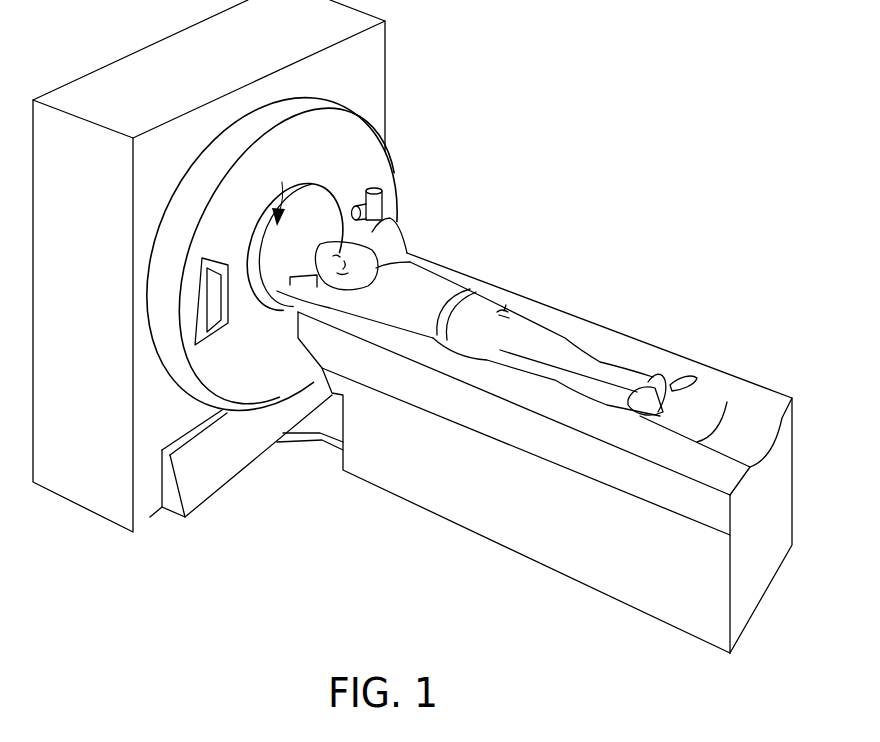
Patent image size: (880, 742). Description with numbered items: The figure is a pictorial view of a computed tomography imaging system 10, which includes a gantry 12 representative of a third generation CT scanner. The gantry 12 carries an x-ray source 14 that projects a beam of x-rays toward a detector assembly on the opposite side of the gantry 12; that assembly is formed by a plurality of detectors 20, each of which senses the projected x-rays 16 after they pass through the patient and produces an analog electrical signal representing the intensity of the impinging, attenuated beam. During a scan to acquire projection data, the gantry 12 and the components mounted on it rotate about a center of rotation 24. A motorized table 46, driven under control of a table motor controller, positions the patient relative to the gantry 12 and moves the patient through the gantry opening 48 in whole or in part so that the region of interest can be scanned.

The CT imaging system 10 is at (572, 201).
The gantry 12 is at (355, 175).
The x-ray source 14 is at (383, 210).
The projected x-rays 16 is at (224, 331).
The detectors 20 is at (216, 270).
The center of rotation 24 is at (422, 278).
The motorized table 46 is at (513, 530).
The gantry opening 48 is at (280, 190).